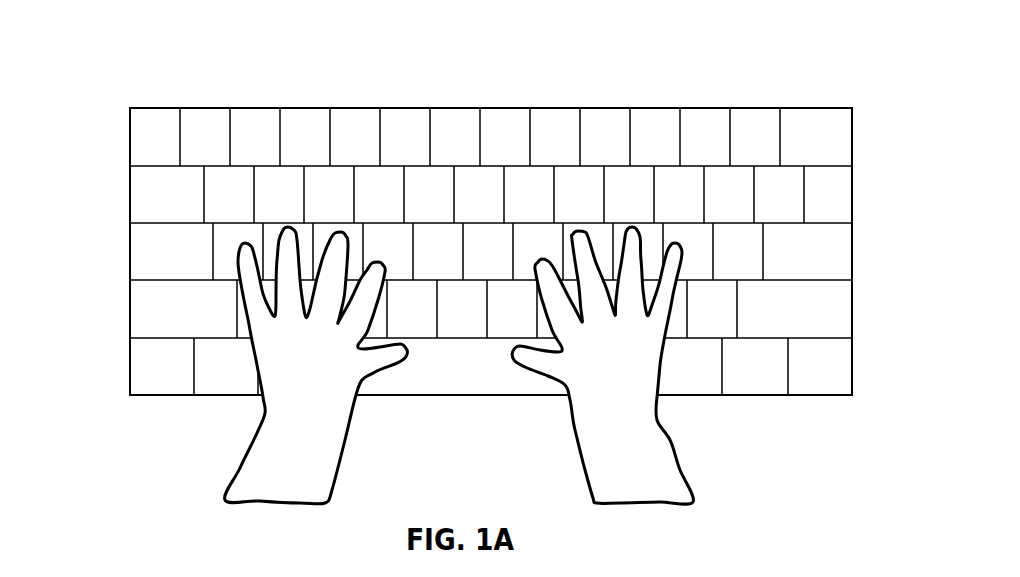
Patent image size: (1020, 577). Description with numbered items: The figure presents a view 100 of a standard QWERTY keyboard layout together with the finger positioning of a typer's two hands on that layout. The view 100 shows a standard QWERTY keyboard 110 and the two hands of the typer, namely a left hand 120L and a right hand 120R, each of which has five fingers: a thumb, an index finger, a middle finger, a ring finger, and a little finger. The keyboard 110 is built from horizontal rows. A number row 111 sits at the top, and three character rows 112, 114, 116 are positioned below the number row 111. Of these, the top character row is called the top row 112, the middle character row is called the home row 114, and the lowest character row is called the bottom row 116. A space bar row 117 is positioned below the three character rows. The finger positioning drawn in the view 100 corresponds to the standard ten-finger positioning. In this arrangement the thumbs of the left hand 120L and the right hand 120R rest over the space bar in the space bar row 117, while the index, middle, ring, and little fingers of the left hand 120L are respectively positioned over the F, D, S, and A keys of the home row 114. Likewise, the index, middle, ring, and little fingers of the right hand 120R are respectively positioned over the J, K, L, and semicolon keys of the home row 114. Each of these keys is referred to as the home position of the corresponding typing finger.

The view 100 is at (731, 47).
The QWERTY keyboard 110 is at (475, 108).
The number row 111 is at (130, 136).
The top row 112 is at (130, 191).
The home row 114 is at (130, 250).
The bottom row 116 is at (130, 303).
The space bar row 117 is at (130, 361).
The left hand 120L is at (250, 443).
The right hand 120R is at (670, 443).